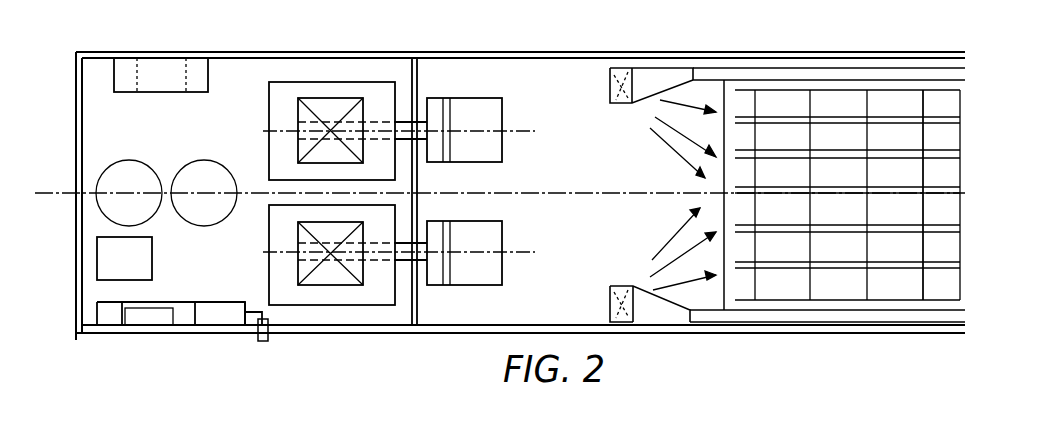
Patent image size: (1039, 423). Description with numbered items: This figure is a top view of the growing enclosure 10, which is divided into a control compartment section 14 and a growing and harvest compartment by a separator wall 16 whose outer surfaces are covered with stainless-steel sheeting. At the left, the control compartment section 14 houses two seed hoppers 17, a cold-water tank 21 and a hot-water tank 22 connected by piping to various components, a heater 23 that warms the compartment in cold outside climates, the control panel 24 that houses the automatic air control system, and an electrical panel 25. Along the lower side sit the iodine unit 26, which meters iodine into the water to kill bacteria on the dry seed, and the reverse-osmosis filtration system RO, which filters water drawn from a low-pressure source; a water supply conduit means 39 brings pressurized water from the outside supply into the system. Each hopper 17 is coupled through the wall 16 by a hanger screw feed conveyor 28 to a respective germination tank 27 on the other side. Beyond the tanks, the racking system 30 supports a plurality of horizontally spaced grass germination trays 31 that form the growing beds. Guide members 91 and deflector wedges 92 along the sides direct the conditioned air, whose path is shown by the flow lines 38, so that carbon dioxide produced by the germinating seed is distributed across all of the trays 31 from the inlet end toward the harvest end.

The vehicle 10 is at (826, 36).
The control compartment section 14 is at (247, 90).
The separator wall 16 is at (418, 190).
The seed hopper 17 is at (348, 90).
The cold-water tank 21 is at (153, 158).
The hot-water tank 22 is at (229, 163).
The heater 23 is at (155, 248).
The control panel 24 is at (195, 69).
The electrical panel 25 is at (125, 72).
The iodine unit 26 is at (153, 322).
The reverse-osmosis filtration system RO is at (223, 323).
The germination tank 27 is at (505, 138).
The hanger screw feed conveyor 28 is at (418, 108).
The racking system 30 is at (957, 176).
The grass germination tray 31 is at (945, 140).
The flow lines 38 is at (680, 172).
The water supply conduit means 39 is at (270, 338).
The guide bar 91 is at (765, 78).
The deflector wedge 92 is at (610, 84).